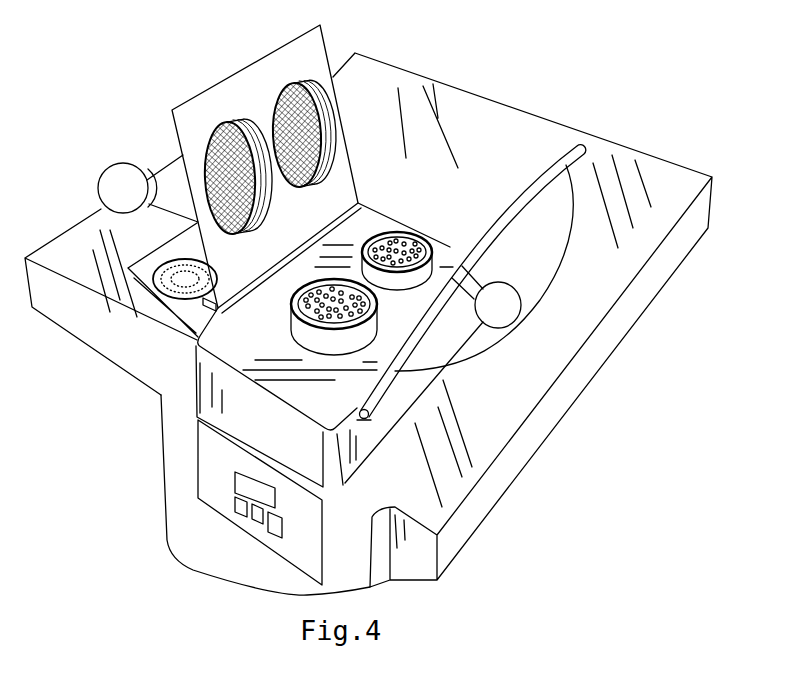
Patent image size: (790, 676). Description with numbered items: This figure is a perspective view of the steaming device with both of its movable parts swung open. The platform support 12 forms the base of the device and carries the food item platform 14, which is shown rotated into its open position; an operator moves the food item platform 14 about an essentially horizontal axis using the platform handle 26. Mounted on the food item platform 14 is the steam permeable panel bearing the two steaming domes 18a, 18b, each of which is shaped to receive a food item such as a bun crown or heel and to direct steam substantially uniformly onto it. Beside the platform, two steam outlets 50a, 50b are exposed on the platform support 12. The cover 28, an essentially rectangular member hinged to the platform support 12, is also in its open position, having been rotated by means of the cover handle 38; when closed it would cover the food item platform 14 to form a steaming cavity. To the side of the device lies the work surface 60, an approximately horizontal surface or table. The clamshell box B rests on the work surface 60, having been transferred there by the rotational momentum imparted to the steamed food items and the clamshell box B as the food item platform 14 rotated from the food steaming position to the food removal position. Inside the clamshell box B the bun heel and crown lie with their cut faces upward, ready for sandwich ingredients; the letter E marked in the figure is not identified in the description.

The platform support 12 is at (363, 433).
The food item platform 14 is at (250, 75).
The steaming dome 18a is at (222, 127).
The steaming dome 18b is at (306, 84).
The platform handle 26 is at (120, 190).
The cover 28 is at (545, 243).
The cover handle 38 is at (502, 312).
The steam outlet 50a is at (292, 318).
The steam outlet 50b is at (393, 237).
The work surface 60 is at (653, 173).
The clamshell box B is at (163, 265).
The sample disc E is at (185, 285).